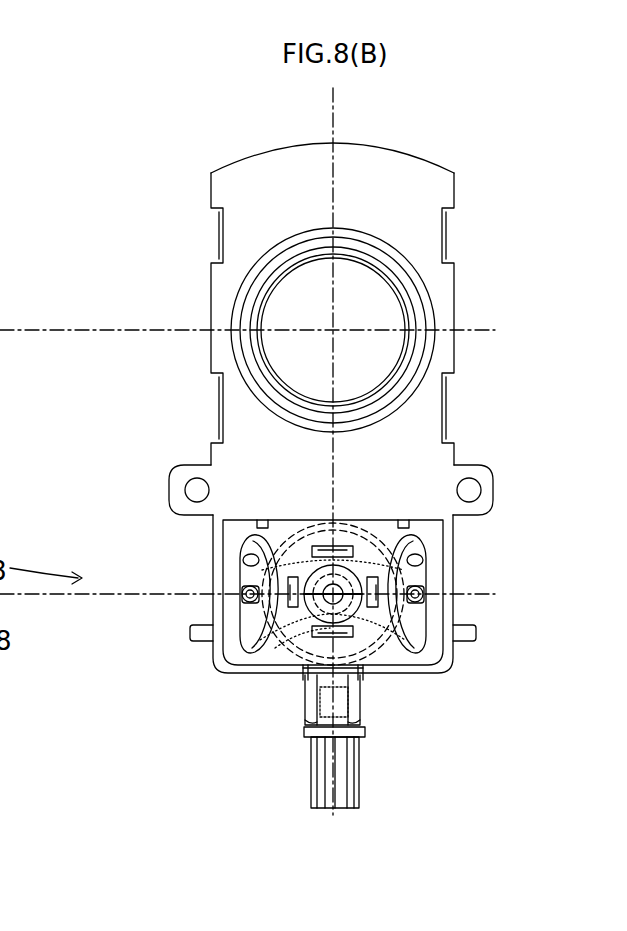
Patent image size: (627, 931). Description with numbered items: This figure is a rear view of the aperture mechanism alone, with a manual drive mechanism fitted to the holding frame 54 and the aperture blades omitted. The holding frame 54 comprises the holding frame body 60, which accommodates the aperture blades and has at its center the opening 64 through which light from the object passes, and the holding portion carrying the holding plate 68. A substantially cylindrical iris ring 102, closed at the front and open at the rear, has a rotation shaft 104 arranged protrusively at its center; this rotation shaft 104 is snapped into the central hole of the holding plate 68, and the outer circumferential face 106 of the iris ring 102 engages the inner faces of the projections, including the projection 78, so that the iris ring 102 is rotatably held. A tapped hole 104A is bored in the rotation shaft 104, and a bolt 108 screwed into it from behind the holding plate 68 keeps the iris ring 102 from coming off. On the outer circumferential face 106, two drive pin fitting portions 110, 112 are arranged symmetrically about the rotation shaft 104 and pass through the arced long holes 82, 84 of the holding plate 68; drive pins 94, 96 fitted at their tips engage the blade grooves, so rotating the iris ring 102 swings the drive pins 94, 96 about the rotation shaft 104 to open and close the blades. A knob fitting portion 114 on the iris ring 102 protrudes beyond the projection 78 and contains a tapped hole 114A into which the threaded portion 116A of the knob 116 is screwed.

The holding frame 54 is at (366, 196).
The holding frame body 60 is at (499, 401).
The opening 64 is at (382, 285).
The holding plate 68 is at (437, 580).
The projection 78 is at (365, 683).
The arced long hole 82 is at (258, 547).
The arced long hole 84 is at (425, 562).
The drive pin 94 is at (249, 598).
The drive pin 96 is at (423, 596).
The iris ring 102 is at (262, 570).
The rotation shaft 104 is at (300, 606).
The tapped hole 104A is at (290, 650).
The outer circumferential face 106 is at (357, 615).
The bolt 108 is at (380, 650).
The drive pin fitting portion 110 is at (248, 594).
The drive pin fitting portion 112 is at (424, 592).
The knob fitting portion 114 is at (286, 698).
The tapped hole 114A is at (307, 716).
The knob 116 is at (342, 815).
The threaded portion 116A is at (367, 732).